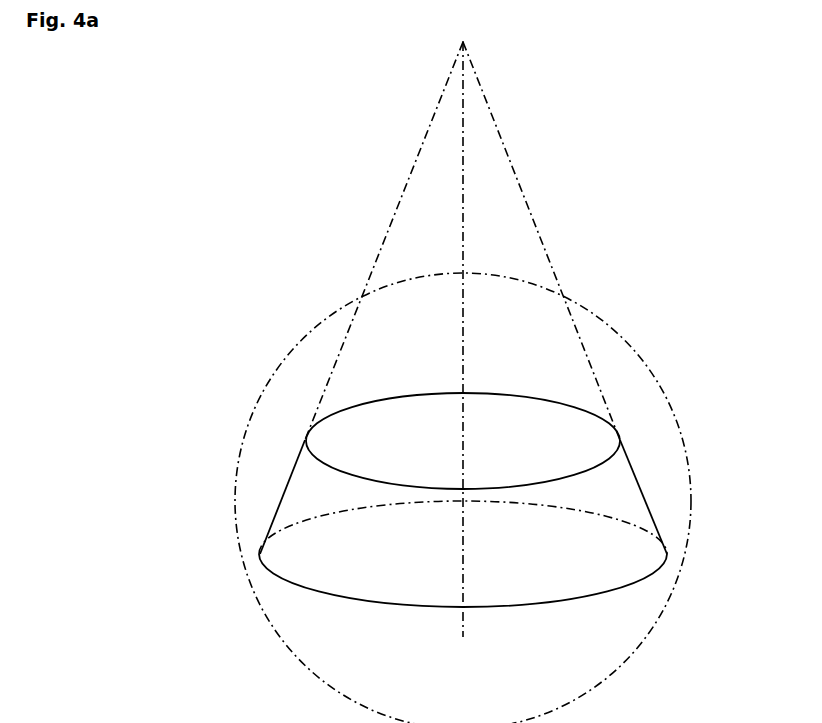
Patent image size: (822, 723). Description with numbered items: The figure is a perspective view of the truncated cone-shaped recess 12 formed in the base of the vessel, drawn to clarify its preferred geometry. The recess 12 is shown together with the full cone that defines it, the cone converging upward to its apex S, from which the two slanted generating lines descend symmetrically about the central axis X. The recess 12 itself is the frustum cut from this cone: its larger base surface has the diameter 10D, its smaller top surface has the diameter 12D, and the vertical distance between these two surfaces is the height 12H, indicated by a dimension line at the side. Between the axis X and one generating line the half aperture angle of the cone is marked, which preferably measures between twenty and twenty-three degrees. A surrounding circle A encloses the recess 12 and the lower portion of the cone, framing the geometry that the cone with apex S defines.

The recess 12 is at (410, 368).
The diameter of the top surface 12D is at (355, 408).
The diameter of the base surface 10D is at (605, 592).
The height 12H is at (490, 553).
The sphere A is at (620, 338).
The apex S is at (463, 30).
The cone axis X is at (463, 354).